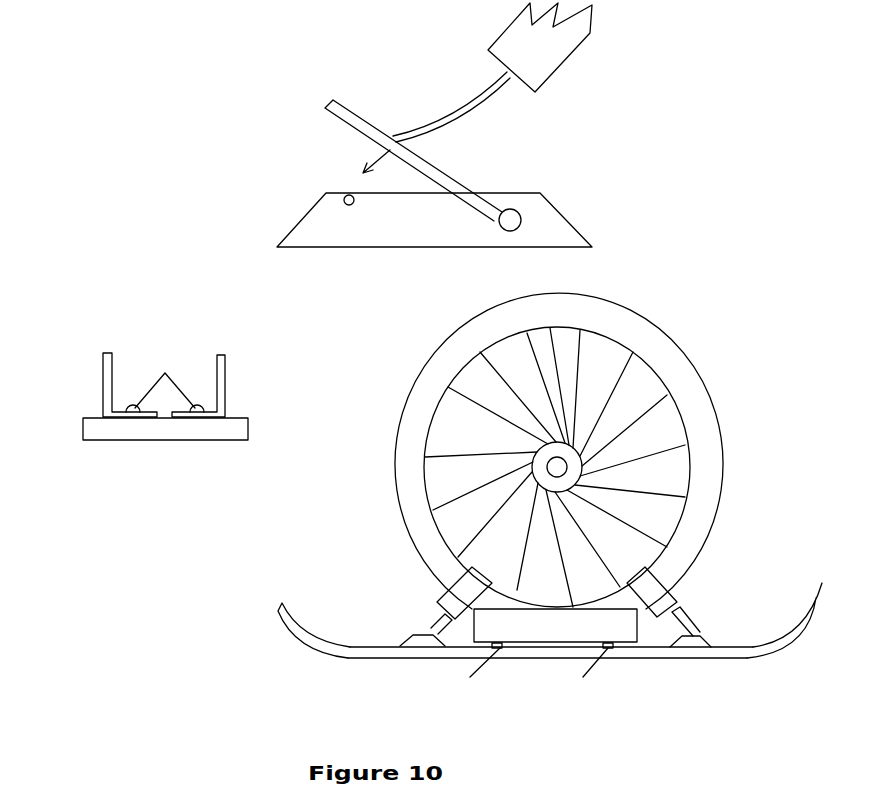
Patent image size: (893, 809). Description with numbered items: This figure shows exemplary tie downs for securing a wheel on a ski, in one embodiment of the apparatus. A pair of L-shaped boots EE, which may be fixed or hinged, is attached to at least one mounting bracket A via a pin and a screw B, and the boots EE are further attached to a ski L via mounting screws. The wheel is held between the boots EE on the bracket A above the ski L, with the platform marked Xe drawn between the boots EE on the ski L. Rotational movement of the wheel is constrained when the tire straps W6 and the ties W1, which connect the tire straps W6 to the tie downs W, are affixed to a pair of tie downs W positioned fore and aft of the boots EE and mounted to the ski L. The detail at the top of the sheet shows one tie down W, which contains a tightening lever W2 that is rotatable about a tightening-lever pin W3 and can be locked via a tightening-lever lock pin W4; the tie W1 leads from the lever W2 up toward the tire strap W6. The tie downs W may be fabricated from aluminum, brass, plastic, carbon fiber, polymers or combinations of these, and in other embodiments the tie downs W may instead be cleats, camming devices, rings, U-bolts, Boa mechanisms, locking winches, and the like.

The tie down W is at (300, 217).
The tie W1 is at (453, 110).
The tightening lever W2 is at (348, 124).
The tightening-lever pin W3 is at (513, 216).
The tightening-lever lock pin W4 is at (345, 196).
The tire strap W6 is at (470, 592).
The mounting bracket A is at (123, 439).
The screw B is at (165, 373).
The L-shaped boots EE is at (103, 372).
The housing platform Xe is at (635, 628).
The ski L is at (747, 655).